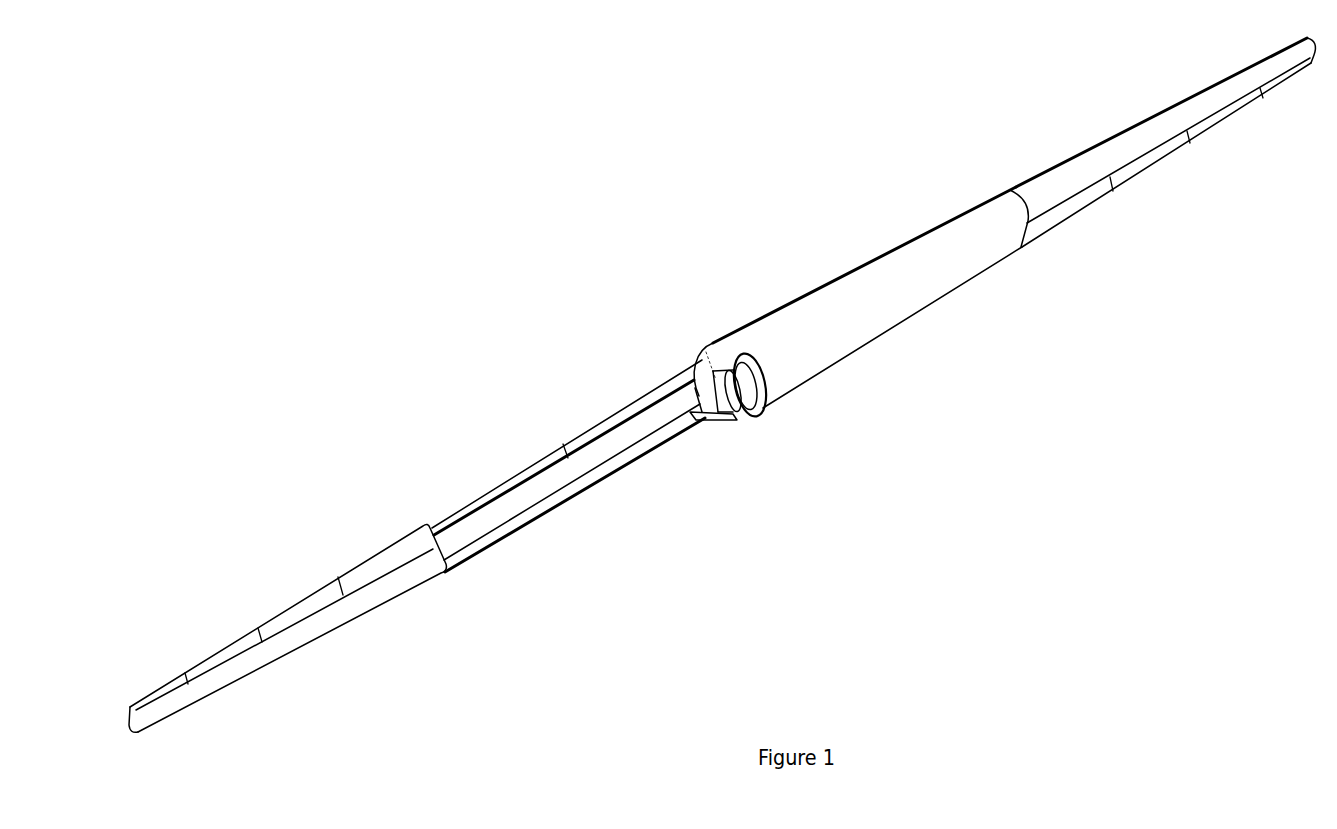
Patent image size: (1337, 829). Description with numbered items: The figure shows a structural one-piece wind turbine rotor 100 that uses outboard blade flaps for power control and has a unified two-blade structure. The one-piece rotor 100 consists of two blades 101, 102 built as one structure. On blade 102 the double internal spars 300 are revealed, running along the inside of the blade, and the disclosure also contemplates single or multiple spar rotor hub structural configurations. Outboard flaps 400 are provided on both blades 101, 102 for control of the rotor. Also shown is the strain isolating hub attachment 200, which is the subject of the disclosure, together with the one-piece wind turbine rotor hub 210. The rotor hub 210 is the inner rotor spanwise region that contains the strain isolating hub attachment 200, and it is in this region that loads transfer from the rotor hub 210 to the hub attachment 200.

The one-piece rotor 100 is at (860, 243).
The blade 101 is at (1112, 123).
The blade 102 is at (287, 681).
The strain isolating hub attachment 200 is at (777, 427).
The one-piece wind turbine rotor hub 210 is at (728, 307).
The double internal spars 300 is at (568, 458).
The outboard flaps 400 is at (1138, 165).